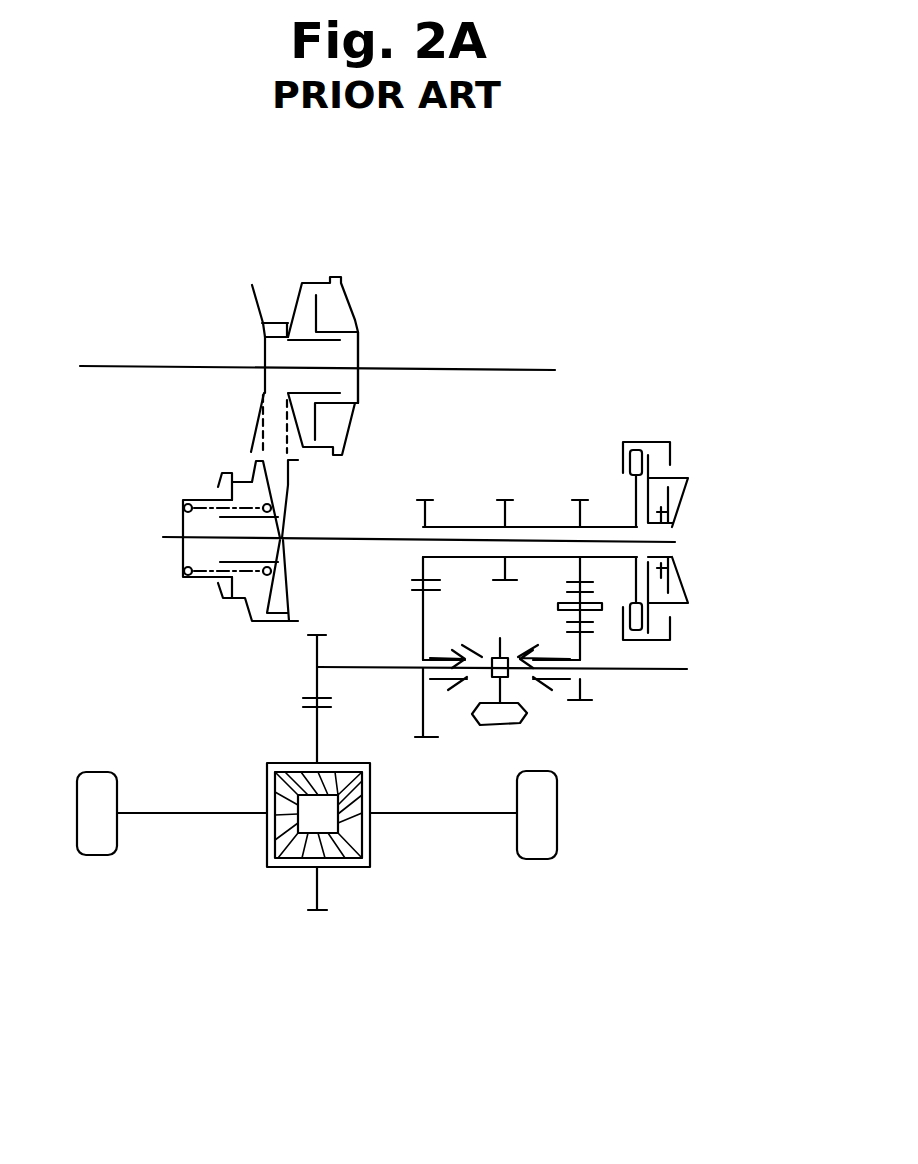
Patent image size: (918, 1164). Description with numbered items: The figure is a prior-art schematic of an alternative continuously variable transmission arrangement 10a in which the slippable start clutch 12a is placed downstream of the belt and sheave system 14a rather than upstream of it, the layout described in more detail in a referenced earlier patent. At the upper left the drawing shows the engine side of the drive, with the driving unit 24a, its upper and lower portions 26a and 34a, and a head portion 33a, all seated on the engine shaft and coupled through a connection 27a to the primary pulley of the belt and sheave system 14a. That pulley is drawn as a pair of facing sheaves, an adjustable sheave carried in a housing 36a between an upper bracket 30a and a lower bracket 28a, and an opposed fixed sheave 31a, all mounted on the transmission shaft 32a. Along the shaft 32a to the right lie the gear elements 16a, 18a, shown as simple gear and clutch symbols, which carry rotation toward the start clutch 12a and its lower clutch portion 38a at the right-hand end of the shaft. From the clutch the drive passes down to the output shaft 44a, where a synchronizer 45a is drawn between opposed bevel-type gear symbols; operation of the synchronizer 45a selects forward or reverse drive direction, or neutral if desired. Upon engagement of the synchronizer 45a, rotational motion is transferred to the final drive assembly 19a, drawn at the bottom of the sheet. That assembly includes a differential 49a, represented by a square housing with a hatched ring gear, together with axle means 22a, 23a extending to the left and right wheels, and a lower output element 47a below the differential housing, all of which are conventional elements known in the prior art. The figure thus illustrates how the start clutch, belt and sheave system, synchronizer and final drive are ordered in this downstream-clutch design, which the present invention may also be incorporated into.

The power transmission system 10a is at (518, 268).
The start clutch 12a is at (682, 438).
The belt and sheave system 14a is at (306, 250).
The gear 16a is at (404, 597).
The gear 18a is at (404, 597).
The final drive assembly 19a is at (220, 750).
The axle means 22a is at (428, 814).
The axle means 23a is at (192, 814).
The engine housing 24a is at (372, 345).
The piston / cylinder upper portion 26a is at (303, 322).
The drive connection 27a is at (257, 430).
The lower pulley bracket 28a is at (190, 587).
The upper pulley bracket 30a is at (250, 490).
The fixed sheave 31a is at (298, 488).
The transmission input shaft 32a is at (335, 537).
The cylinder head 33a is at (273, 323).
The lower piston portion 34a is at (356, 423).
The pulley housing 36a is at (183, 548).
The lower clutch portion 38a is at (643, 630).
The output shaft 44a is at (632, 670).
The synchronizer 45a is at (521, 679).
The differential output 47a is at (312, 920).
The differential 49a is at (354, 878).